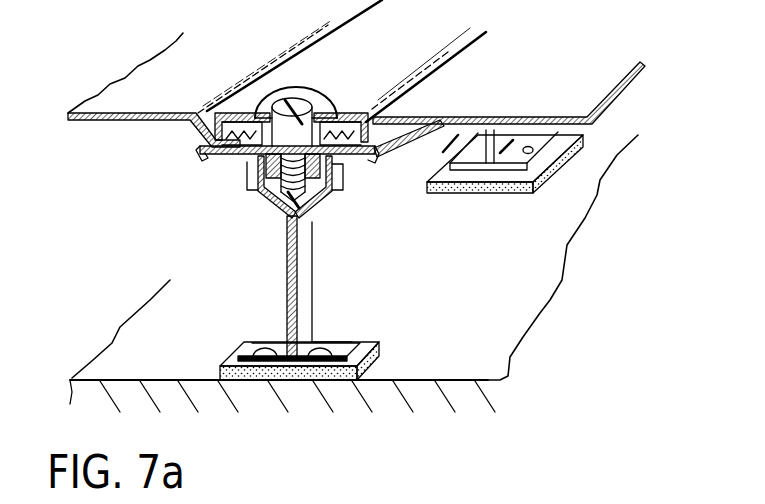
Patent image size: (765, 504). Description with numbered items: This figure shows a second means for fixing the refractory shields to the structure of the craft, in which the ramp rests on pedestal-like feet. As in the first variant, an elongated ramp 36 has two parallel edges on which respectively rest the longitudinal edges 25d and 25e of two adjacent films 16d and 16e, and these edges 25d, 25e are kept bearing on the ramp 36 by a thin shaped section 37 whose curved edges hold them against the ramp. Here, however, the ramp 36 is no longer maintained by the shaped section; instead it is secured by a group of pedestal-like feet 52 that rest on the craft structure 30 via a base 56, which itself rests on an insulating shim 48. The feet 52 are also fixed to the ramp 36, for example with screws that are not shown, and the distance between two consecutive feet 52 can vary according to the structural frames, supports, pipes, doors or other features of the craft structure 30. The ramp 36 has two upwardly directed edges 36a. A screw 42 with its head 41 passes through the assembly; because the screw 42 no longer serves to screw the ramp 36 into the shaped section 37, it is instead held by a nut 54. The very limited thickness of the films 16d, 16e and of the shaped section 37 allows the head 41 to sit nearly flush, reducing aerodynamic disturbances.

The film 16e is at (102, 100).
The film 16d is at (595, 82).
The shaped section 37 is at (240, 112).
The head 41 is at (322, 96).
The screw 42 is at (300, 212).
The longitudinal edge 25e is at (205, 150).
The longitudinal edge 25d is at (377, 160).
The ramp 36 is at (212, 168).
The upwardly directed edge 36a is at (214, 164).
The nut 54 is at (258, 192).
The pedestal-like foot 52 is at (309, 298).
The insulating shim 48 is at (290, 381).
The base 56 is at (345, 382).
The craft structure 30 is at (484, 382).